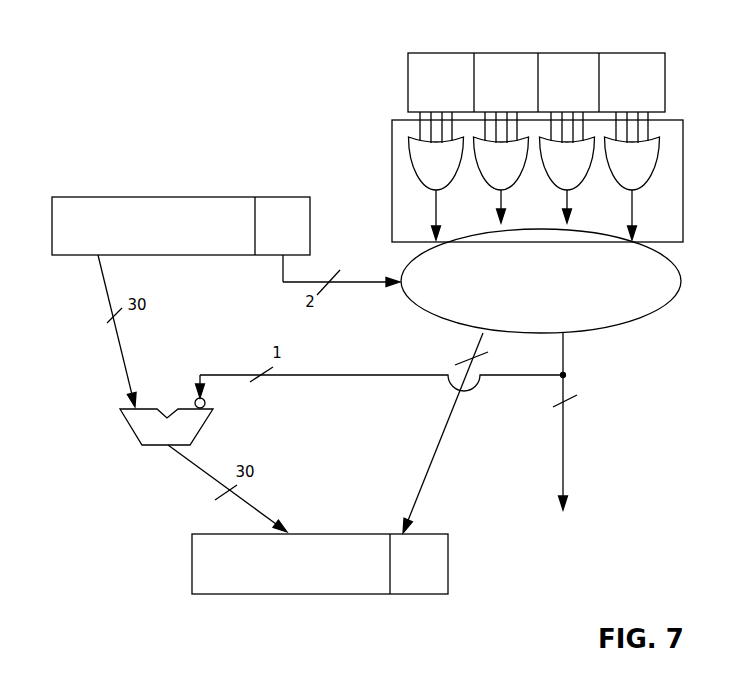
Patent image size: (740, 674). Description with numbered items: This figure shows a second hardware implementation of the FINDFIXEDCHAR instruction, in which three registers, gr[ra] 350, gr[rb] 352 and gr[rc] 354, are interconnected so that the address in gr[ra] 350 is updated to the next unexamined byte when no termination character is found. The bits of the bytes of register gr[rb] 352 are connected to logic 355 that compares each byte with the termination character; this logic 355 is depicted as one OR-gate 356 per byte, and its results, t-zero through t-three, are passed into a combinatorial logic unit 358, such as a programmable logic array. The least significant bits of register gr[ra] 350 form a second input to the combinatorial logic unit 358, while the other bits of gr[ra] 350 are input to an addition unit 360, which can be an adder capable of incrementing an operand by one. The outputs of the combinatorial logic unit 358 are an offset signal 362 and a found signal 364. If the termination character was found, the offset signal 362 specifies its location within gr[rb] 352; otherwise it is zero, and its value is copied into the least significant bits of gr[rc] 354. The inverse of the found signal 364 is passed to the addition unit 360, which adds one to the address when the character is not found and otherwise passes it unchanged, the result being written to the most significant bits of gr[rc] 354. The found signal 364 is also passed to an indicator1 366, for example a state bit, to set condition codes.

The register gr[ra] 350 is at (122, 197).
The register gr[rb] 352 is at (425, 53).
The register gr[rc] 354 is at (265, 594).
The logic 355 is at (410, 160).
The OR-gate 356 is at (400, 187).
The combinatorial logic unit 358 is at (402, 270).
The addition unit 360 is at (132, 433).
The offset signal 362 is at (475, 345).
The found signal 364 is at (565, 427).
The indicator1 366 is at (562, 535).